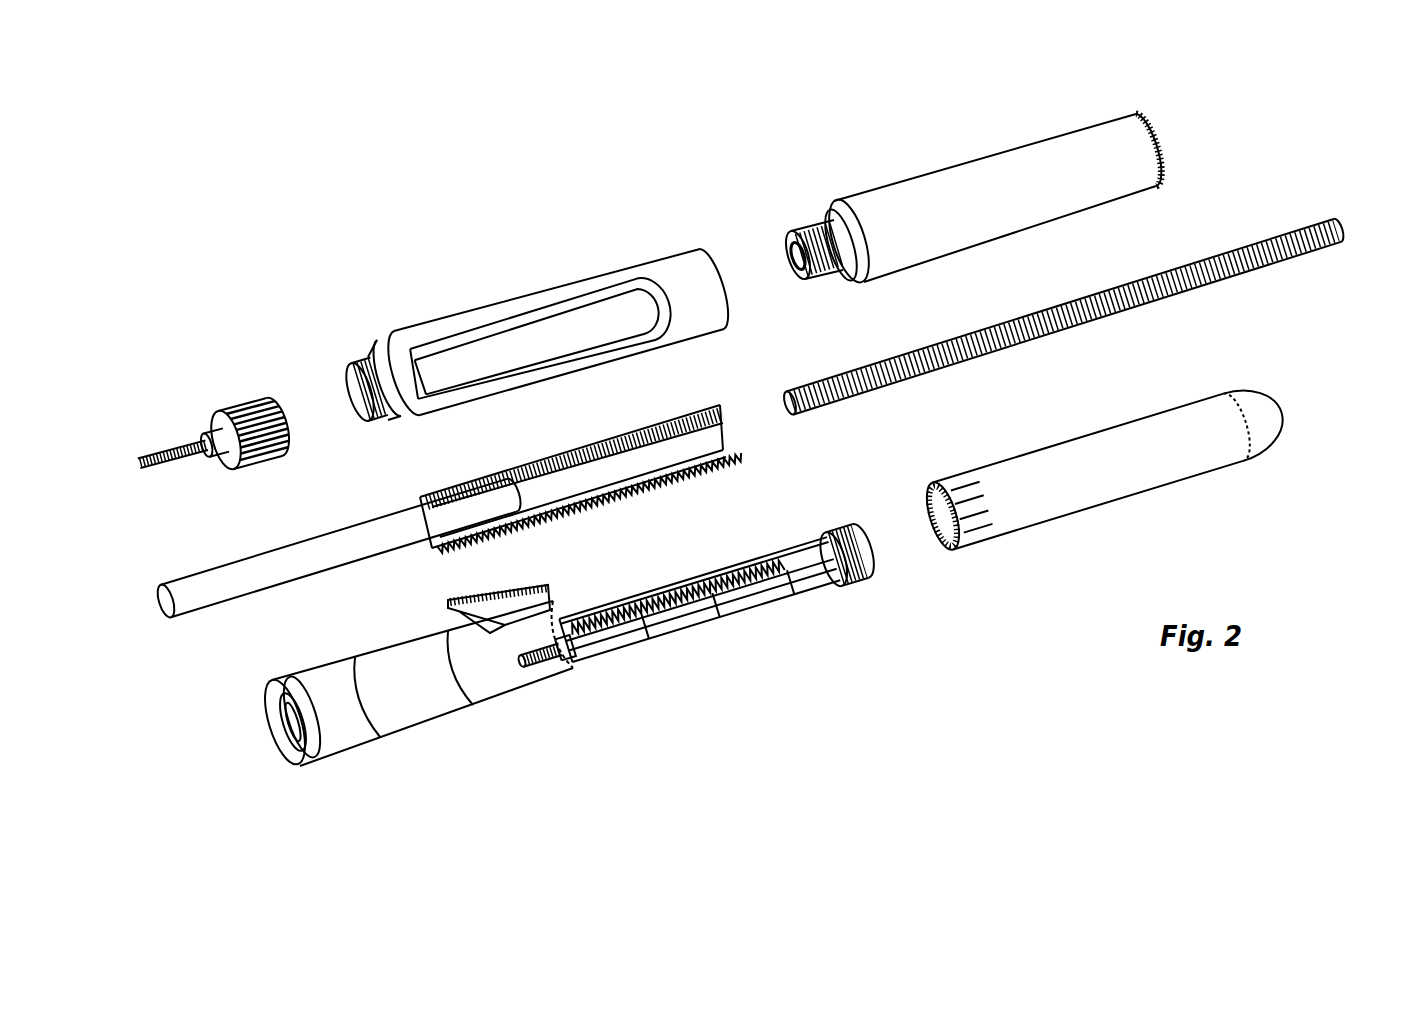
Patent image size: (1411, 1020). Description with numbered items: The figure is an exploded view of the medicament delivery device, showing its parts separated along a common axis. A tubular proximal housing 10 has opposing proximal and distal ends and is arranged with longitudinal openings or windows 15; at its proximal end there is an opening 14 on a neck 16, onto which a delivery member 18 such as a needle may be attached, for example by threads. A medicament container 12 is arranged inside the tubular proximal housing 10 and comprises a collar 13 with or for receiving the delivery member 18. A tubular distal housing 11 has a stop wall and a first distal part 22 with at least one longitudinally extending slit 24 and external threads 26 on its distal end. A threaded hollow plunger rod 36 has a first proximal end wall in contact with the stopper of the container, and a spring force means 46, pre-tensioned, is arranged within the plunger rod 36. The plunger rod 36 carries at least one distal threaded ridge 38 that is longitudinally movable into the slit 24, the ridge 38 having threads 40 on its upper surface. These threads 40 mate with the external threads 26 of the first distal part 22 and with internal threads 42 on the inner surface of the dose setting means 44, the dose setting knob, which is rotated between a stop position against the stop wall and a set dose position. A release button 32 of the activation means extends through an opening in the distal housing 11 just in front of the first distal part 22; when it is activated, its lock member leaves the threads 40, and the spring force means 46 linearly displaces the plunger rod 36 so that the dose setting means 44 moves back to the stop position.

The tubular proximal housing 10 is at (650, 252).
The tubular distal housing 11 is at (427, 705).
The medicament container 12 is at (979, 222).
The collar 13 is at (816, 238).
The opening 14 is at (358, 388).
The longitudinal openings or windows 15 is at (617, 318).
The neck / stop wall 16 is at (388, 418).
The delivery member 18 is at (180, 447).
The first distal part 22 is at (683, 627).
The longitudinally extending slit 24 is at (766, 545).
The external threads 26 is at (850, 575).
The release button 32 is at (533, 613).
The threaded hollow plunger rod 36 is at (287, 580).
The distal threaded ridge 38 is at (613, 494).
The threads 40 is at (540, 455).
The internal threads 42 is at (960, 527).
The dose setting means 44 is at (1084, 489).
The spring force means 46 is at (1308, 250).